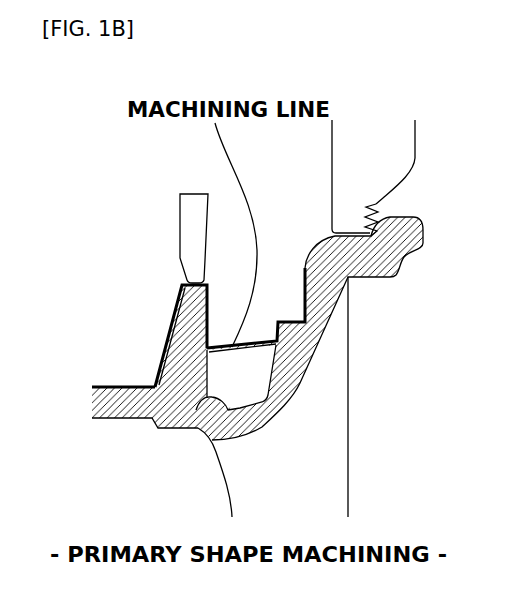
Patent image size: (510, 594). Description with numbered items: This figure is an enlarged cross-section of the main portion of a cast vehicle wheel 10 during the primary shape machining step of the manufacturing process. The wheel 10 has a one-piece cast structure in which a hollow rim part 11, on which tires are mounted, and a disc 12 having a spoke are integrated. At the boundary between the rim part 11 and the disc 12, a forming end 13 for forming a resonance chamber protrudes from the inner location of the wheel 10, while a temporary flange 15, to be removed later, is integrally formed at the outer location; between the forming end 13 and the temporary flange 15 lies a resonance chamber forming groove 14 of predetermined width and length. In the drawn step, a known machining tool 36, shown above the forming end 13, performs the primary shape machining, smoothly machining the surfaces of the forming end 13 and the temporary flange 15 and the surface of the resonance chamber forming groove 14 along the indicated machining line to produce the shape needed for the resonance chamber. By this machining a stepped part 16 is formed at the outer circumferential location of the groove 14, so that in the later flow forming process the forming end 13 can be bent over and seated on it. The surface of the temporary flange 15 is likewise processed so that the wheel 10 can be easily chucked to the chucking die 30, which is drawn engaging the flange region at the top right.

The vehicle wheel 10 is at (168, 276).
The rim part 11 is at (120, 410).
The disc 12 is at (243, 483).
The forming end 13 is at (180, 347).
The resonance chamber forming groove 14 is at (196, 410).
The temporary flange 15 is at (365, 262).
The stepped part 16 is at (265, 337).
The chucking die 30 is at (338, 168).
The machining tool 36 is at (188, 215).